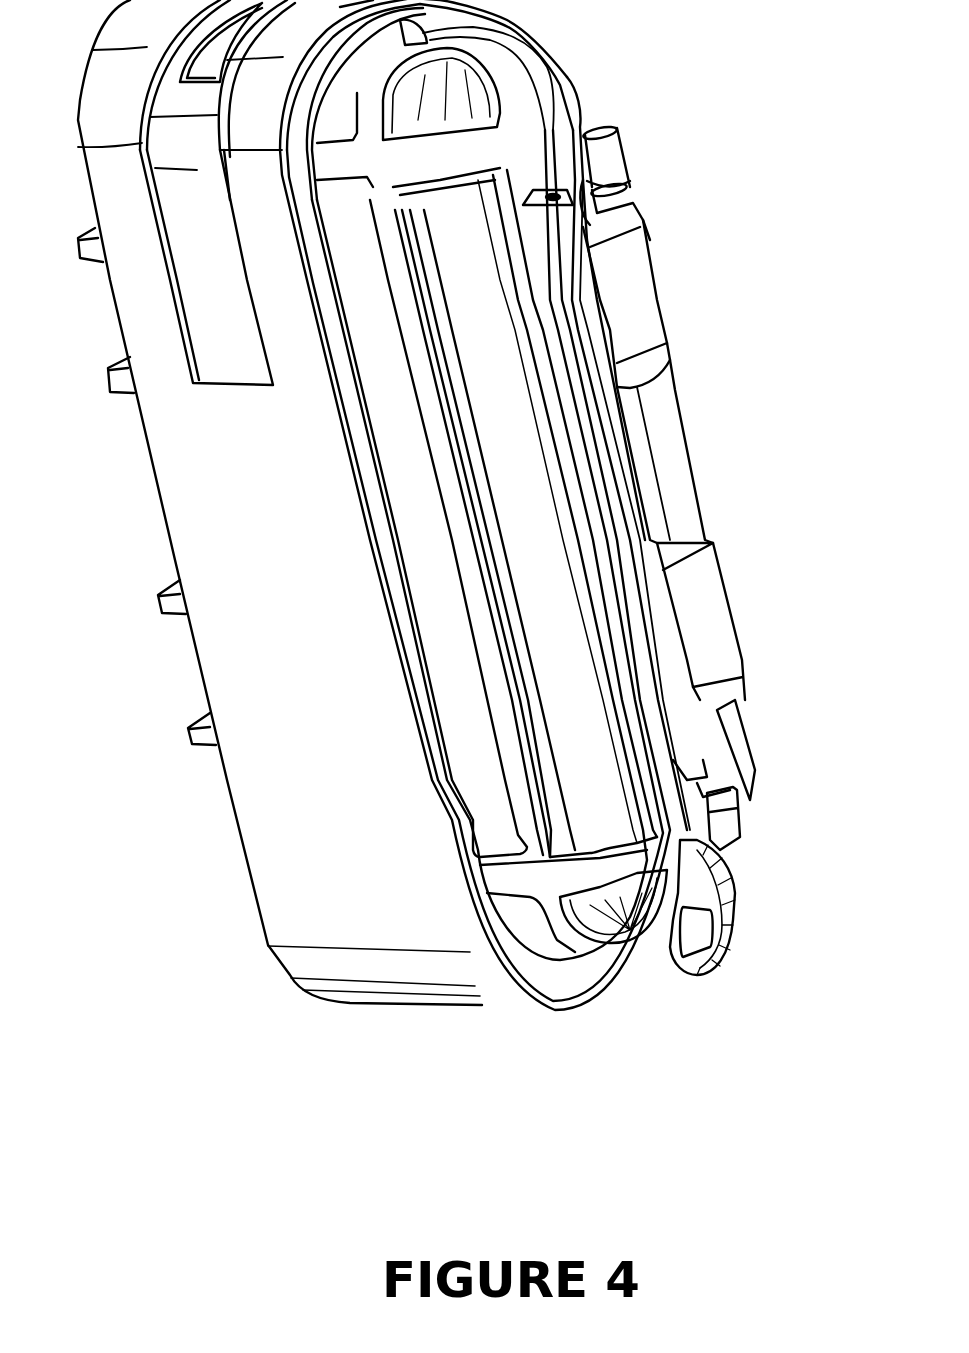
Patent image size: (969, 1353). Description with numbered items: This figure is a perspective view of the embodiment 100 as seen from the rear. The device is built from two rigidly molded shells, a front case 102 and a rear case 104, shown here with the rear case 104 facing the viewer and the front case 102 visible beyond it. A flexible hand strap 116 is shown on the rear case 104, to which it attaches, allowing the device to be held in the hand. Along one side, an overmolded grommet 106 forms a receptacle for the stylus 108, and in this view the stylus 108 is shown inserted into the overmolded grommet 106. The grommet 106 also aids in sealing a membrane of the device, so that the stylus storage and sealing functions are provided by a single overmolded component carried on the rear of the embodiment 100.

The embodiment 100 is at (476, 573).
The front case 102 is at (727, 820).
The rear case 104 is at (630, 928).
The overmolded grommet 106 is at (705, 612).
The stylus 108 is at (676, 450).
The hand strap 116 is at (287, 800).